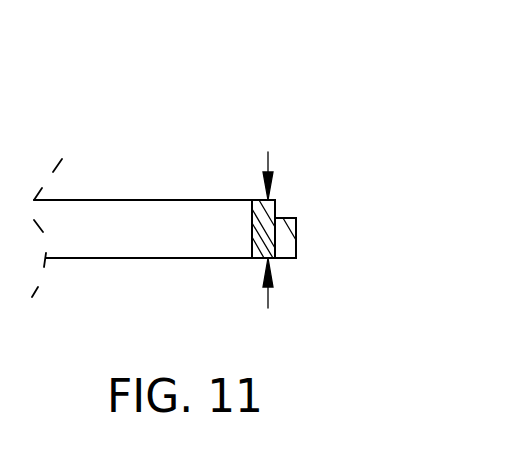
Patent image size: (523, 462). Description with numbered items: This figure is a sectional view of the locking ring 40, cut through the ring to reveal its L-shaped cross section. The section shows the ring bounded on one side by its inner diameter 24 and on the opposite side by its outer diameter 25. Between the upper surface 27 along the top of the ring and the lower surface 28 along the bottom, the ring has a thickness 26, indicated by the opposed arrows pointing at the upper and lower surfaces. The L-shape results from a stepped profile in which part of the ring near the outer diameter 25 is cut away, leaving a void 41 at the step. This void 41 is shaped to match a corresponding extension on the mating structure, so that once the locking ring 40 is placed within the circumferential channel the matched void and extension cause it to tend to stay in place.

The panel assembly 40 is at (130, 155).
The inner diameter 24 is at (252, 223).
The upper surface 27 is at (247, 200).
The void 41 is at (278, 209).
The outer diameter 25 is at (296, 240).
The lower surface 28 is at (273, 258).
The thickness 26 is at (269, 245).